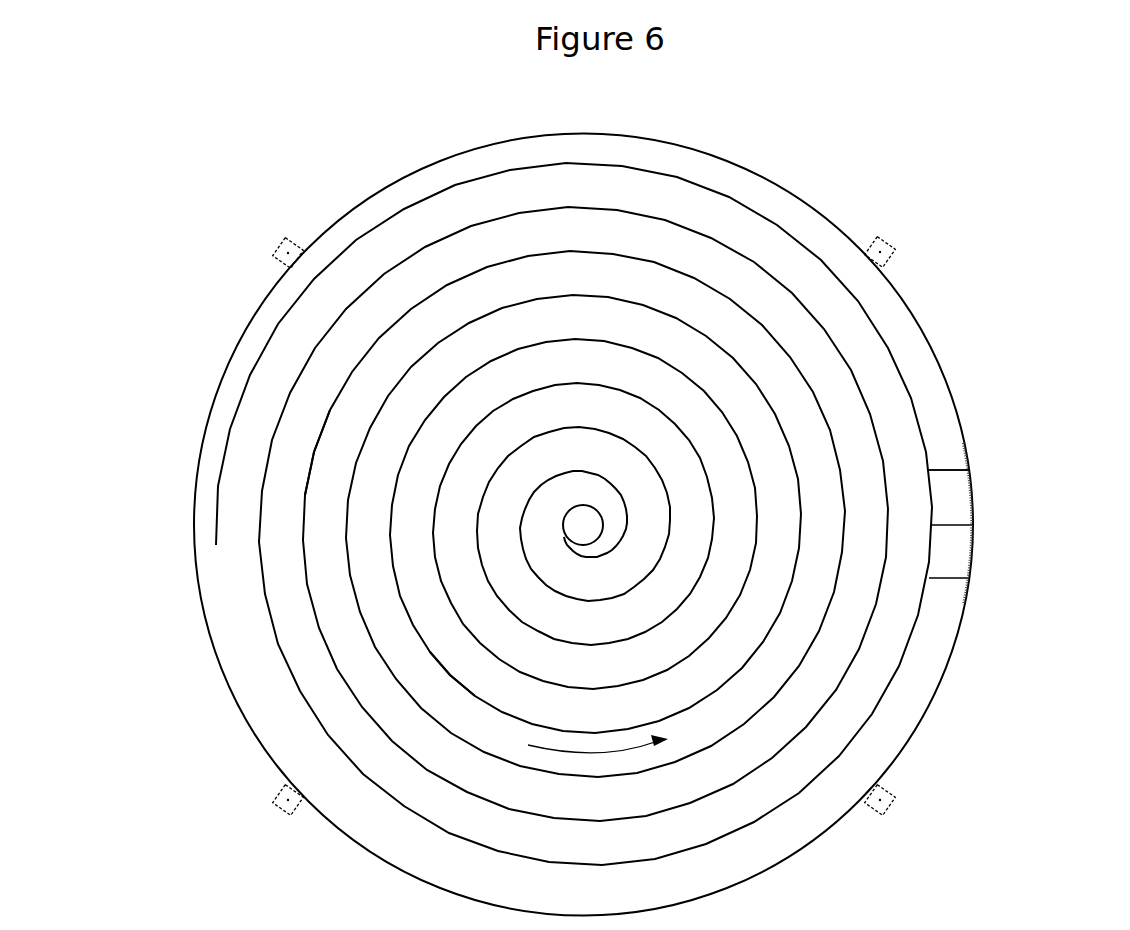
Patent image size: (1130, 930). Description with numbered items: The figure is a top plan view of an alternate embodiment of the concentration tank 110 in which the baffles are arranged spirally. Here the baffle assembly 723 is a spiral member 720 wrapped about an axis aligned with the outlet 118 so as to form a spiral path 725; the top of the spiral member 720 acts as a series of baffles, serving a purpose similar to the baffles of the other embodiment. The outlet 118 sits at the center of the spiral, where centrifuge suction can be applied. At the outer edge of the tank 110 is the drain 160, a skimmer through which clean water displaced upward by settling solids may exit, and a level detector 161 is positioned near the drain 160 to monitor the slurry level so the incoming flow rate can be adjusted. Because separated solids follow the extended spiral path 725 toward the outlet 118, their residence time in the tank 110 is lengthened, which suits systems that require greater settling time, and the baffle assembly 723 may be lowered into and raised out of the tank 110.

The concentration tank 110 is at (238, 345).
The spiral member 720 is at (229, 434).
The baffle assembly 723 is at (345, 283).
The spiral path 725 is at (462, 657).
The outlet 118 is at (585, 525).
The drain 160 is at (972, 507).
The level detector 161 is at (963, 473).